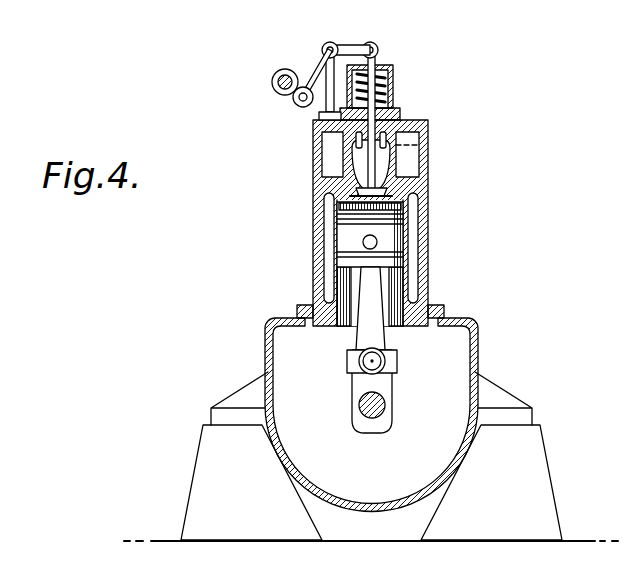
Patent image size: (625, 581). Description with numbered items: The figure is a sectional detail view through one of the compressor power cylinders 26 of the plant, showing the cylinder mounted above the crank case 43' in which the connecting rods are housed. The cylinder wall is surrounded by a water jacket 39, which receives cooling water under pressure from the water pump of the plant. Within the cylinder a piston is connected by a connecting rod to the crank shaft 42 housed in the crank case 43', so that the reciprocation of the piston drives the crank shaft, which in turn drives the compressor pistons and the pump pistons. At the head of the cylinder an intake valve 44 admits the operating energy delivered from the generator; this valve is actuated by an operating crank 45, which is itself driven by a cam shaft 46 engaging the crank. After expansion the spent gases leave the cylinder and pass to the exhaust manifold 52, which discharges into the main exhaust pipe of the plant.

The compressor power cylinder 26 is at (413, 262).
The water jacket 39 is at (326, 192).
The crank shaft 42 is at (393, 393).
The crank case 43' is at (388, 399).
The intake valve 44 is at (374, 190).
The operating crank 45 is at (320, 52).
The cam shaft 46 is at (279, 73).
The exhaust manifold 52 is at (393, 170).